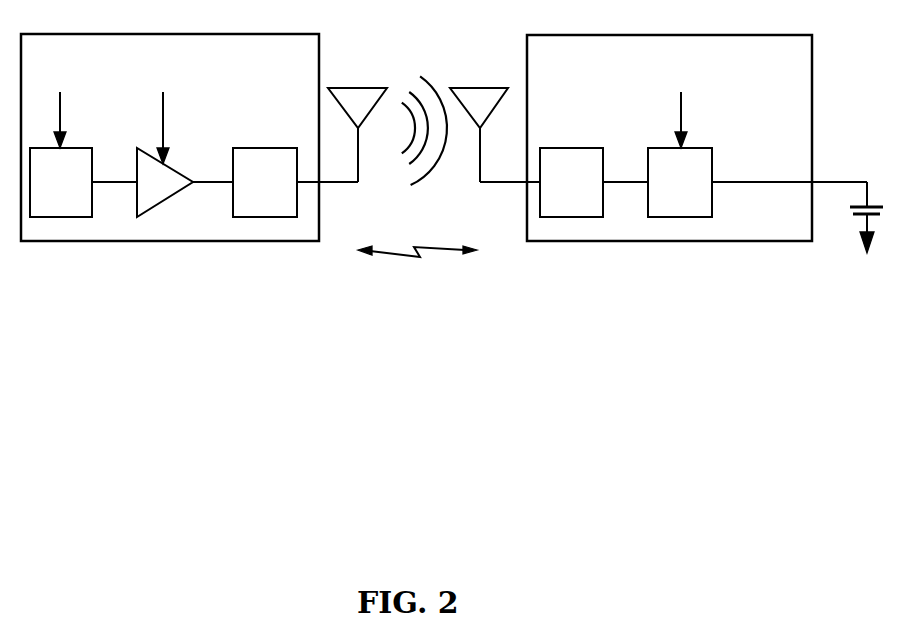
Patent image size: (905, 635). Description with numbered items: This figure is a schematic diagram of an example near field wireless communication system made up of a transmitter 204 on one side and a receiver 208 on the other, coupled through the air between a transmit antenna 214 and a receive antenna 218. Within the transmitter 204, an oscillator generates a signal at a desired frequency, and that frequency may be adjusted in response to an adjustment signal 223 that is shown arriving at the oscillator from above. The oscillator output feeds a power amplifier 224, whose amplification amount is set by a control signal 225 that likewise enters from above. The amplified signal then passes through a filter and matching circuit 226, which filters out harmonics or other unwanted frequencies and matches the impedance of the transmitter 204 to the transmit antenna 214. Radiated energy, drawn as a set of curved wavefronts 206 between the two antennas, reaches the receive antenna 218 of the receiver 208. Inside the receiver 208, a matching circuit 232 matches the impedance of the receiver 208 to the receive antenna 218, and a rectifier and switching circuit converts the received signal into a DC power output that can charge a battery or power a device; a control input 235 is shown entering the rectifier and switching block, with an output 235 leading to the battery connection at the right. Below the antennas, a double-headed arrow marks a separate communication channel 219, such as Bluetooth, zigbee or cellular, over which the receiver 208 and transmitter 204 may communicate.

The transmitter 204 is at (170, 137).
The wireless power signal / electromagnetic waves 206 is at (423, 176).
The receiver 208 is at (669, 138).
The transmit antenna 214 is at (357, 47).
The receive antenna 218 is at (497, 88).
The communication channel 219 is at (423, 270).
The adjustment signal 223 is at (60, 104).
The power amplifier 224 is at (185, 187).
The control signal 225 is at (163, 104).
The filter and matching circuit 226 is at (550, 158).
The matching circuit 232 is at (571, 166).
The switching control signal / output to load 235 is at (681, 104).